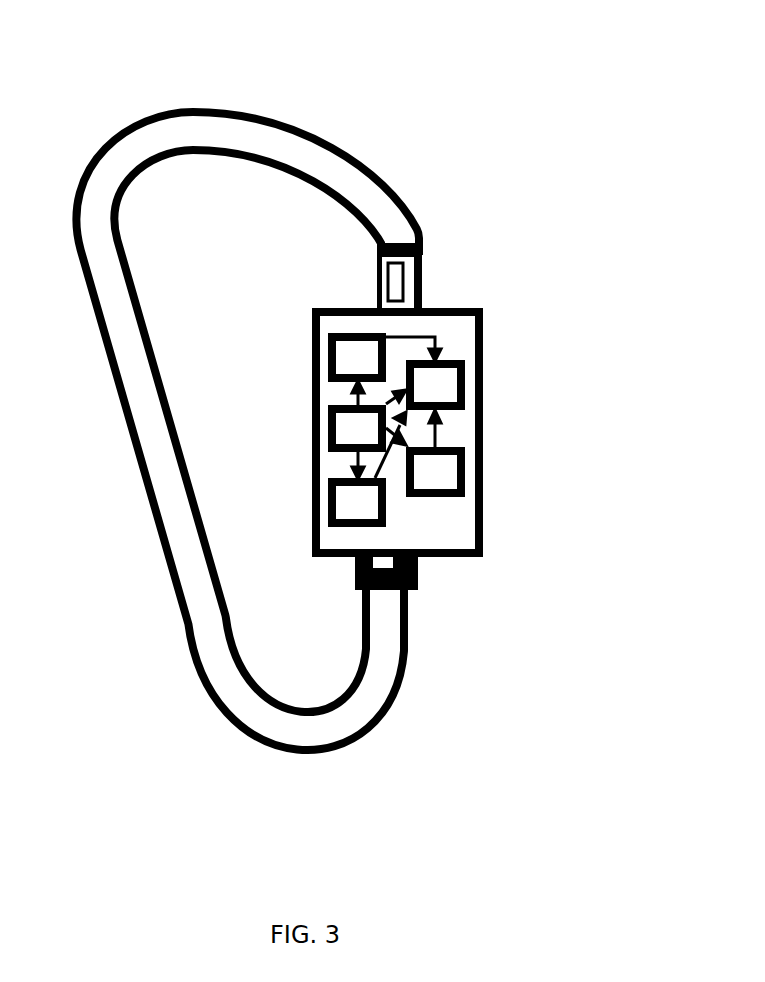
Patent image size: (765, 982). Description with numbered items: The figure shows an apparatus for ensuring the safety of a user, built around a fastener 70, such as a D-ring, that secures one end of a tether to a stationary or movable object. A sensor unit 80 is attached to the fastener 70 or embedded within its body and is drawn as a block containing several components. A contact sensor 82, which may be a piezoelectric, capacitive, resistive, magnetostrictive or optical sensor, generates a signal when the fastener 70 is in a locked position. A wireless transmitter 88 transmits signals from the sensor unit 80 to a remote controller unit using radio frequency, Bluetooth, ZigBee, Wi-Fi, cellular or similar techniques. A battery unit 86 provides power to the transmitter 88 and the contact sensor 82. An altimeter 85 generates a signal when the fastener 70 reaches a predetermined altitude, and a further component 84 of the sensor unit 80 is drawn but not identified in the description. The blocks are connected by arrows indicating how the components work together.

The fastener 70 is at (193, 110).
The sensor unit 80 is at (483, 310).
The contact sensor 82 is at (330, 335).
The wireless communication module 84 is at (463, 387).
The altimeter 85 is at (463, 475).
The battery unit 86 is at (330, 432).
The wireless transmitter 88 is at (330, 505).